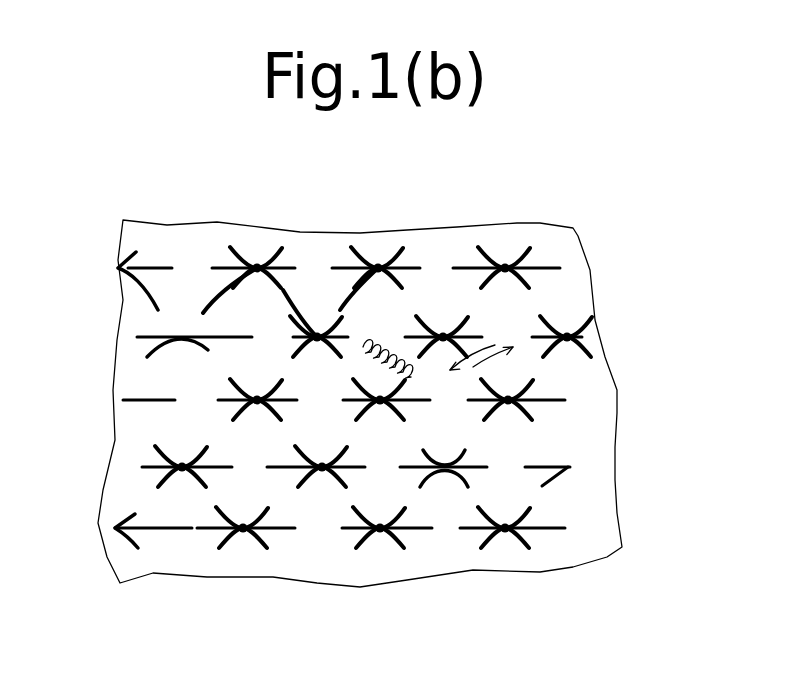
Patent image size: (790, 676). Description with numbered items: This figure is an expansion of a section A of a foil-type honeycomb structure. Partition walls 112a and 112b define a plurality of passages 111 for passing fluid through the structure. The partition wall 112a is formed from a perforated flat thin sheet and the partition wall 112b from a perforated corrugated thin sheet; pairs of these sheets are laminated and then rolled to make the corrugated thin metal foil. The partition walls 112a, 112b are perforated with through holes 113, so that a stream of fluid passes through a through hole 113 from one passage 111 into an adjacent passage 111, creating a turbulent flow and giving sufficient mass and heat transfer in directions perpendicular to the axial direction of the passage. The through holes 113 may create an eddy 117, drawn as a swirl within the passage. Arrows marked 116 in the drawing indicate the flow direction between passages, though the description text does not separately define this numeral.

The passage 111 is at (163, 377).
The partition wall (perforated flat thin sheet) 112a is at (532, 336).
The partition wall (perforated corrugated thin sheet) 112b is at (527, 412).
The through hole 113 is at (440, 267).
The direction of movement 116 is at (463, 382).
The eddy 117 is at (378, 338).
The section A is at (598, 326).